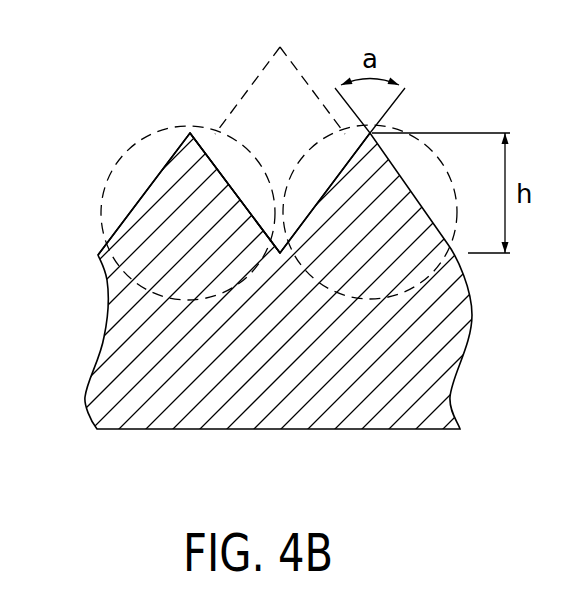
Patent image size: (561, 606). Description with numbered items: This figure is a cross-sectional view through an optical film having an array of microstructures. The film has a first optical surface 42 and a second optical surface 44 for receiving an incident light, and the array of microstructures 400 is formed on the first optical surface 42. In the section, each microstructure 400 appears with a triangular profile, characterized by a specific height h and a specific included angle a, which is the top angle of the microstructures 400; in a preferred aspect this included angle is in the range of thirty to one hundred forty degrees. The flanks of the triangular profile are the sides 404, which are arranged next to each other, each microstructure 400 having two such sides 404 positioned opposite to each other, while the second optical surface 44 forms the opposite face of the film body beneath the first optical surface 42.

The first optical surface 42 is at (131, 180).
The second optical surface 44 is at (137, 430).
The microstructure 400 is at (280, 76).
The side 404 is at (338, 172).